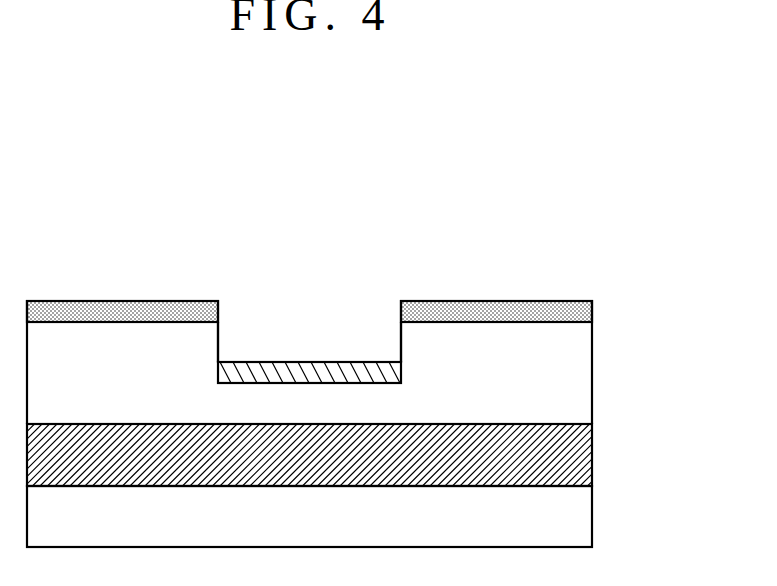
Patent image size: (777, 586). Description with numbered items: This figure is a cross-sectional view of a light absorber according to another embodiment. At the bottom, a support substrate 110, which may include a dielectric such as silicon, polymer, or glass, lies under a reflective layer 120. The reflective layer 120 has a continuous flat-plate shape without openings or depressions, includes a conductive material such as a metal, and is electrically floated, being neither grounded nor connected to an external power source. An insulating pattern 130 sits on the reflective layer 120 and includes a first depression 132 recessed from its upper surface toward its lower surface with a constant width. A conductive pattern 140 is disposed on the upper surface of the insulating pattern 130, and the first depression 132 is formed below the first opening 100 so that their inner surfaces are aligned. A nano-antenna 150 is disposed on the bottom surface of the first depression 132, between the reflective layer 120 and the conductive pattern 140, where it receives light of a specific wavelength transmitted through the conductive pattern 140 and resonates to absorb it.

The first opening 100 is at (219, 310).
The support substrate 110 is at (583, 519).
The reflective layer 120 is at (583, 458).
The insulating pattern 130 is at (583, 375).
The first depression 132 is at (219, 341).
The conductive pattern 140 is at (134, 310).
The nano-antenna 150 is at (342, 372).